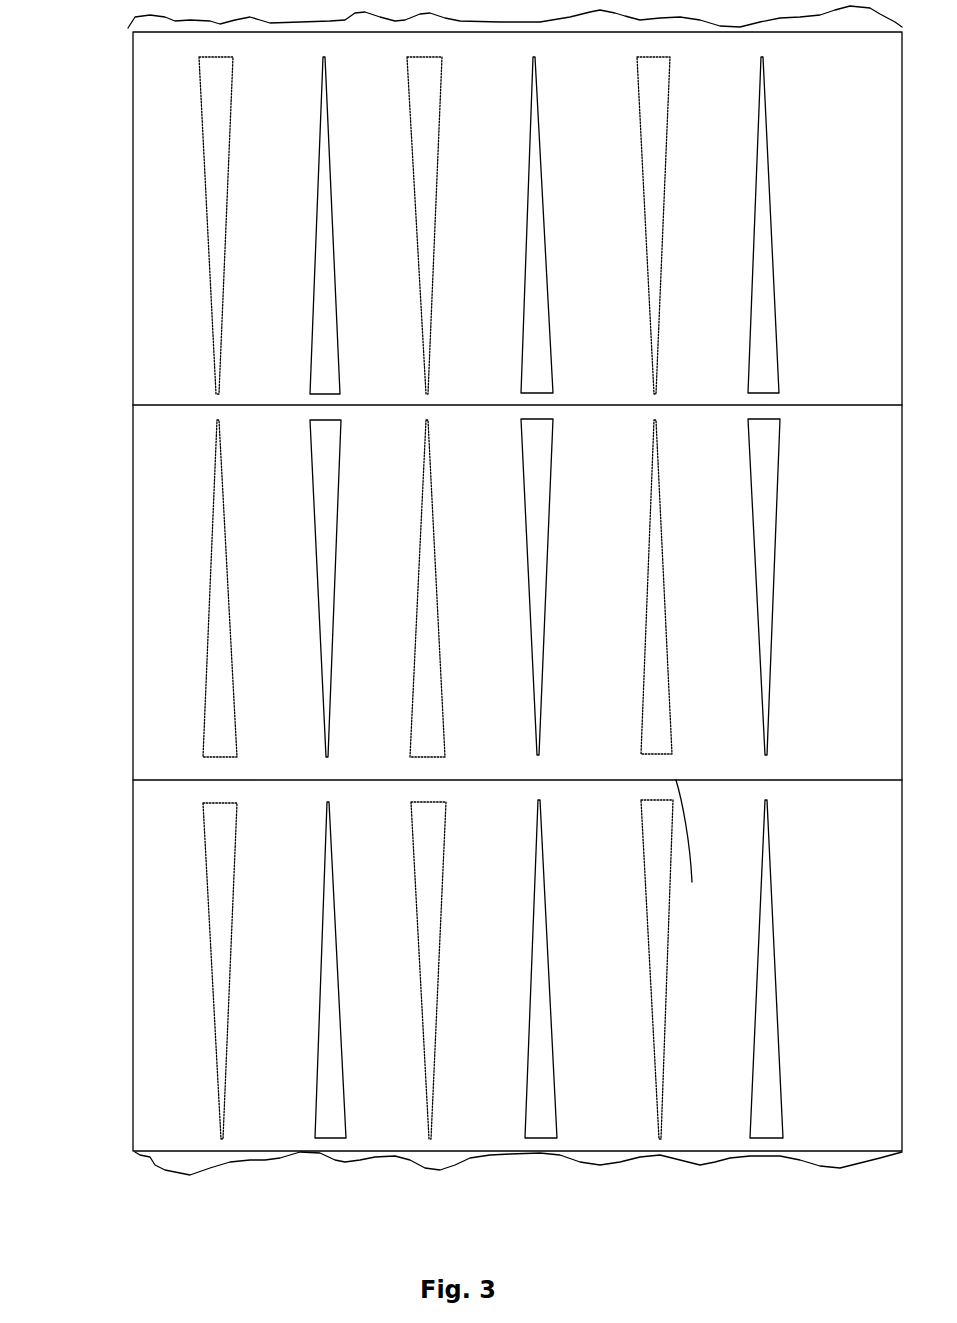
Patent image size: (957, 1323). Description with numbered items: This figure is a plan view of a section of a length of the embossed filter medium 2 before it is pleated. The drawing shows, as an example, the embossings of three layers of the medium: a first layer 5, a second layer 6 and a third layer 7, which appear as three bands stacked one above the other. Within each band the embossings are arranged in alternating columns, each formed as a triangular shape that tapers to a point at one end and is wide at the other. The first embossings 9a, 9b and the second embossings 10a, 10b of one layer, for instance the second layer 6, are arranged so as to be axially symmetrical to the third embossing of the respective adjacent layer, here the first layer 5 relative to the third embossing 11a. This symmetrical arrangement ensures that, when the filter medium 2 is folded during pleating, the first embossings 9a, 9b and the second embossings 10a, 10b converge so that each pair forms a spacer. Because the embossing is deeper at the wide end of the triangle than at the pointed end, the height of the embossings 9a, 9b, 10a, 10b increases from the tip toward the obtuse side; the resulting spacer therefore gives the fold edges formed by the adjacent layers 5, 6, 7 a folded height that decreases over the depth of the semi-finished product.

The embossed filter medium 2 is at (92, 198).
The first layer 5 is at (705, 962).
The second layer 6 is at (708, 627).
The third layer 7 is at (711, 321).
The first embossing 9a is at (325, 302).
The first embossing 9b is at (329, 1053).
The second embossing 10a is at (217, 113).
The second embossing 10b is at (218, 668).
The third embossing 11a is at (472, 780).